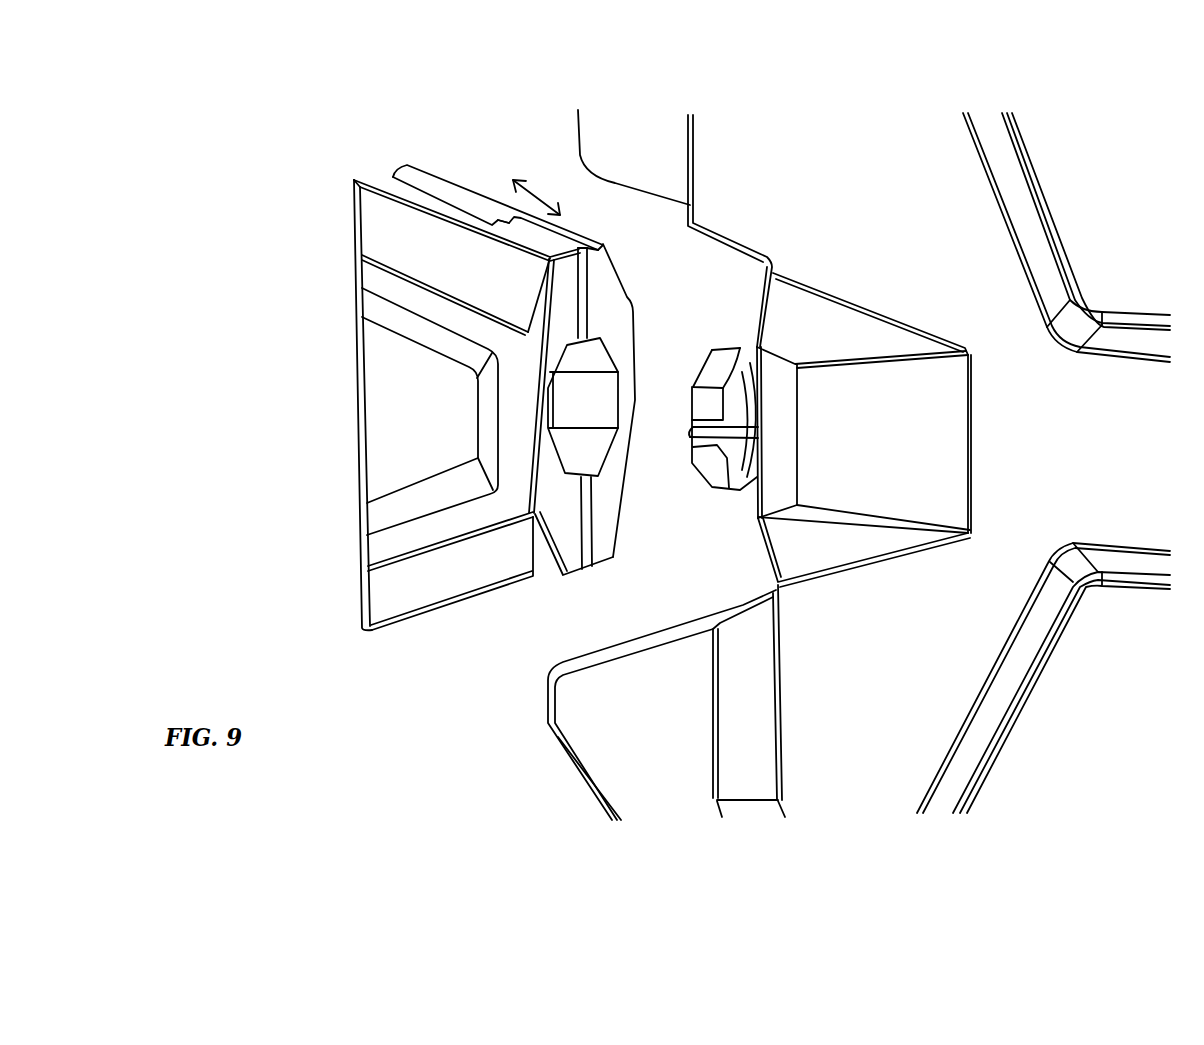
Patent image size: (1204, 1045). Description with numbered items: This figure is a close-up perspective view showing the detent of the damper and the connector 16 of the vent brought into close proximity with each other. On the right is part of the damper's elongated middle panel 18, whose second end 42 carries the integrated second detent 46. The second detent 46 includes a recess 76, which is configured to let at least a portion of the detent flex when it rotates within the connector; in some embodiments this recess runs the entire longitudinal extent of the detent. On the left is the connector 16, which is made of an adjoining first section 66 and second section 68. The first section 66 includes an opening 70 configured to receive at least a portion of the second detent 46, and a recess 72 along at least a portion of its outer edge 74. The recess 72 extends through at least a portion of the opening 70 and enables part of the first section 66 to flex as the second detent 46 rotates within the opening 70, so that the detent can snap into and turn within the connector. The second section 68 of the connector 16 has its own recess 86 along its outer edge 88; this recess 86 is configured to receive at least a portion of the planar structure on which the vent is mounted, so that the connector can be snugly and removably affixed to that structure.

The connector 16 is at (473, 408).
The middle panel 18 is at (1145, 463).
The second end 42 is at (790, 432).
The second detent 46 is at (713, 347).
The first section 66 is at (541, 199).
The second section 68 is at (529, 170).
The opening 70 is at (602, 410).
The recess 72 is at (582, 287).
The outer edge 74 is at (602, 310).
The recess 76 is at (690, 431).
The recess 86 is at (383, 172).
The outer edge 88 is at (455, 185).